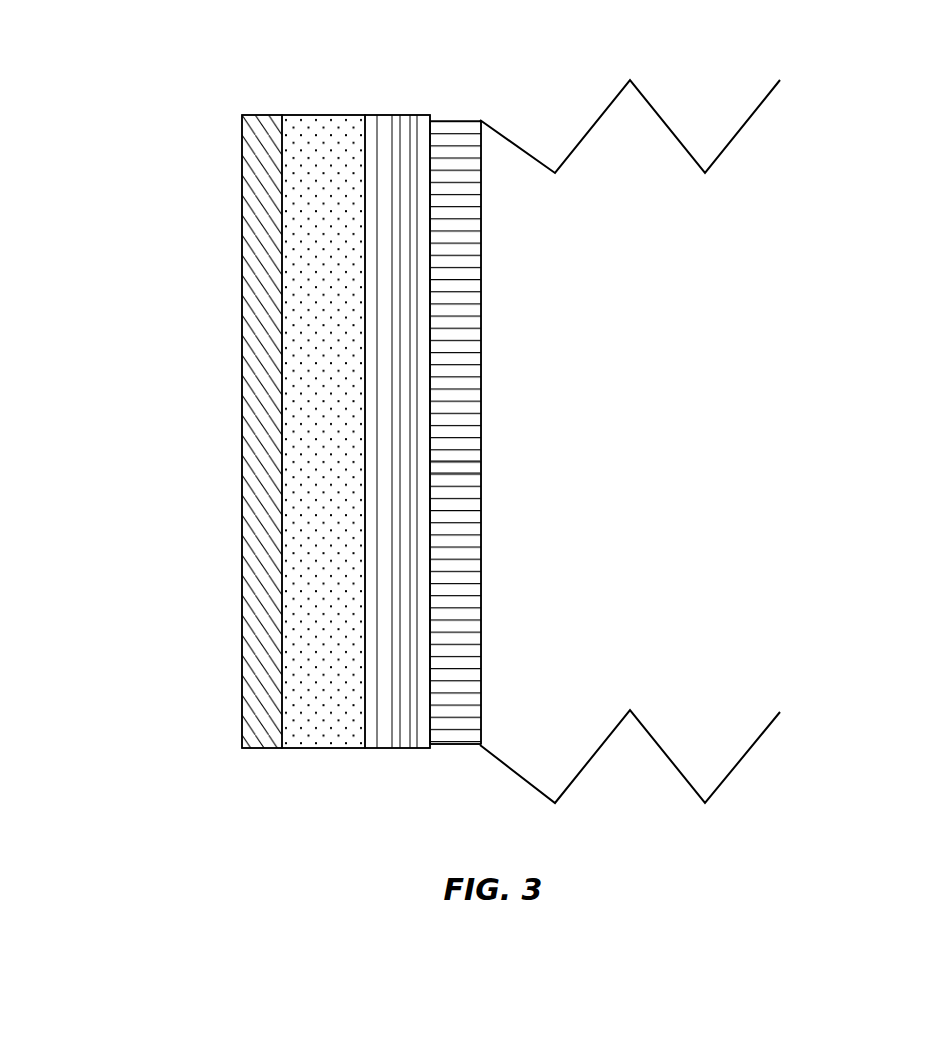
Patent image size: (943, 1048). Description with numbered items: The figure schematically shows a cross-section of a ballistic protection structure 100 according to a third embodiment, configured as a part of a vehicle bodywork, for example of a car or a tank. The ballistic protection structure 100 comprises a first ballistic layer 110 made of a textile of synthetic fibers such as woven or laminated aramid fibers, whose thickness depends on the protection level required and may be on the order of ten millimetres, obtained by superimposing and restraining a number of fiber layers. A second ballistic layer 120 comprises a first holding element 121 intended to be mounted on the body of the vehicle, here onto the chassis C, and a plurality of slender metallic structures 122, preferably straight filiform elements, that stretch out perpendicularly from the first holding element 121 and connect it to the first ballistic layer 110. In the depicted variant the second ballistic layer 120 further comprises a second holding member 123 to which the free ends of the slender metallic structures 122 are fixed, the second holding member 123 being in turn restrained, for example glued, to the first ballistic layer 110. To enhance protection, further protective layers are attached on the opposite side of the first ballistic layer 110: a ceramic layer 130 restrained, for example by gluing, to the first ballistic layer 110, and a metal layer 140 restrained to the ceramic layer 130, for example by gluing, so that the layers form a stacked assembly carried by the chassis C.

The ballistic protection structure 100 is at (172, 184).
The first ballistic layer 110 is at (385, 756).
The second ballistic layer 120 is at (487, 298).
The first holding element 121 is at (483, 566).
The slender metallic structures 122 is at (456, 747).
The second holding member 123 is at (431, 467).
The ceramic layer 130 is at (306, 112).
The metal layer 140 is at (239, 304).
The chassis C is at (657, 105).